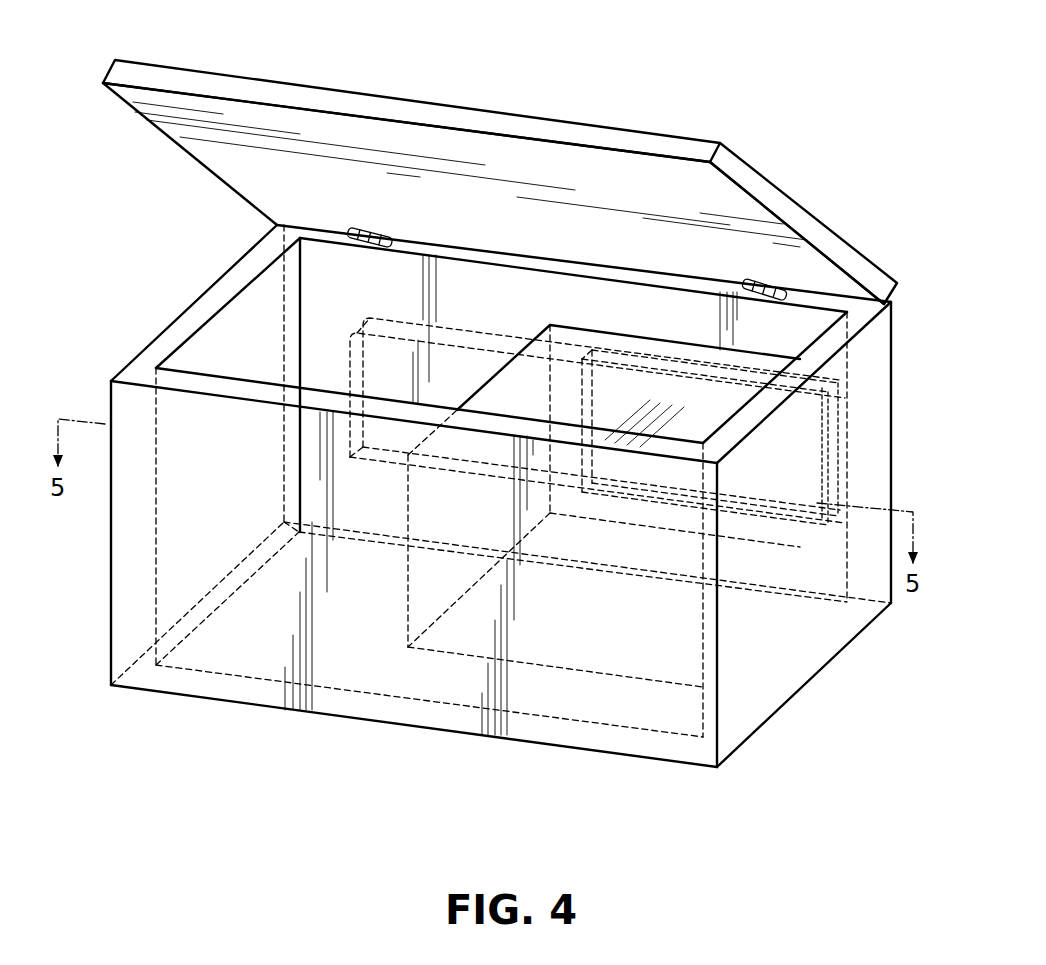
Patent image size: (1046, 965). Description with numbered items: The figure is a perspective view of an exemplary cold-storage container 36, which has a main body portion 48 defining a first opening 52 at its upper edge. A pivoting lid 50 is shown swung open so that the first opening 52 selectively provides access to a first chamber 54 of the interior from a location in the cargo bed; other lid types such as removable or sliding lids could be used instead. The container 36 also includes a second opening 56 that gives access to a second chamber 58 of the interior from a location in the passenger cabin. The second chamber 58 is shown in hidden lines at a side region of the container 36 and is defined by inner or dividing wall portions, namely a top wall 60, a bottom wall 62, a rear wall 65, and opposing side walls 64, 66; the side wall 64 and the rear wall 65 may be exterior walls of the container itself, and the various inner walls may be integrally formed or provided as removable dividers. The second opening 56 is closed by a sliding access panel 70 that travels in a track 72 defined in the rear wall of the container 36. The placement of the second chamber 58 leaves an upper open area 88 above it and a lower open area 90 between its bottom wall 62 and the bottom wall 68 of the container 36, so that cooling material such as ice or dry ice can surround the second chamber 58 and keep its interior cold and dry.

The cold-storage container 36 is at (893, 117).
The main body portion 48 is at (97, 612).
The pivoting lid 50 is at (233, 74).
The first opening 52 is at (197, 375).
The first chamber 54 is at (323, 310).
The second opening 56 is at (837, 387).
The second chamber 58 is at (795, 440).
The top wall 60 is at (540, 397).
The bottom wall 62 is at (627, 633).
The side wall 64 is at (860, 475).
The rear wall 65 is at (467, 627).
The side wall 66 is at (460, 513).
The bottom wall 68 is at (350, 717).
The sliding access panel 70 is at (625, 345).
The track 72 is at (365, 367).
The upper open area 88 is at (650, 328).
The lower open area 90 is at (742, 668).